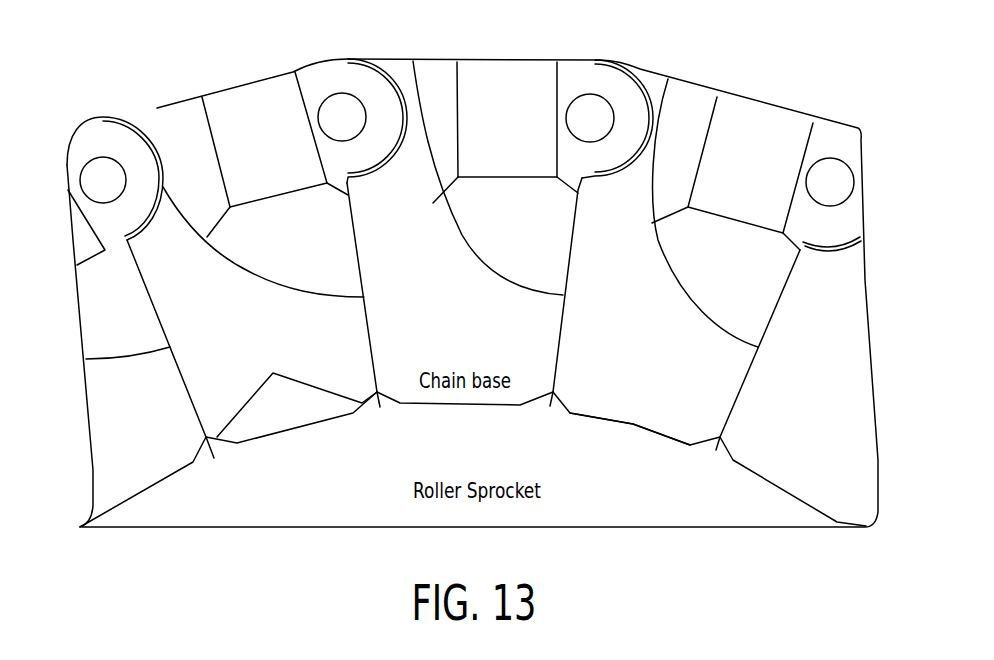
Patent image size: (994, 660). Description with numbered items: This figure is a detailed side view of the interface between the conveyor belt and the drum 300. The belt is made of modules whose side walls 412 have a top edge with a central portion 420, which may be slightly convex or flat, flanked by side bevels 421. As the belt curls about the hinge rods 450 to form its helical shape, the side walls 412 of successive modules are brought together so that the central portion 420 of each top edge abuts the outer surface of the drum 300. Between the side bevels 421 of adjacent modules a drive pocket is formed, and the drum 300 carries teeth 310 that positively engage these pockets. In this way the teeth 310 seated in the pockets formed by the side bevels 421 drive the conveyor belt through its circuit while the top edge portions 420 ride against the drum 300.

The drum 300 is at (346, 503).
The teeth 310 is at (212, 445).
The side walls 412 is at (243, 153).
The central portion 420 is at (633, 425).
The side bevels 421 is at (200, 443).
The hinge rods 450 is at (349, 113).